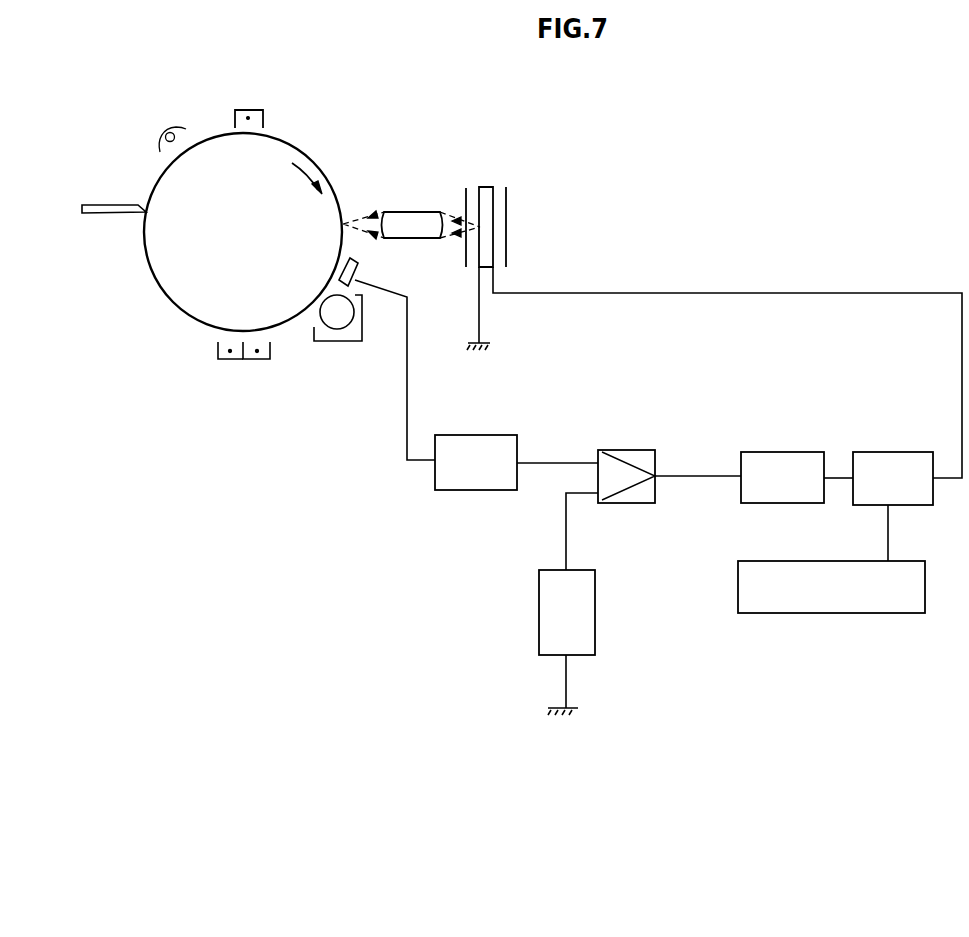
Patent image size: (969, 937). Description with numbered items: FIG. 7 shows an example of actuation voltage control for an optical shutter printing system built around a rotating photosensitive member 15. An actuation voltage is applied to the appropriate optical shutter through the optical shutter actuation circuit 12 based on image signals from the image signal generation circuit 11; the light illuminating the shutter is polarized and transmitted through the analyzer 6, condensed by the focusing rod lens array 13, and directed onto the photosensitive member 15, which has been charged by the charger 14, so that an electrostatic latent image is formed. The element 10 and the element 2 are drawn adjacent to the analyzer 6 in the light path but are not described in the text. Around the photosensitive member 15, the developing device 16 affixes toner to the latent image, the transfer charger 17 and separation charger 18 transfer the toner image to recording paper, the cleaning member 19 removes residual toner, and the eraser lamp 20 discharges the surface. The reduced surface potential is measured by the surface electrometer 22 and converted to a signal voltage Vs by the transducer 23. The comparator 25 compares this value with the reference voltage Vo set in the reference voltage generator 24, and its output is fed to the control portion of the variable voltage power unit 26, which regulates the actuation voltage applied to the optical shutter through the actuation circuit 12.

The light source 2 is at (507, 204).
The analyzer 6 is at (466, 188).
The photosensor 10 is at (494, 188).
The image signal generation circuit 11 is at (796, 615).
The optical shutter actuation circuit 12 is at (884, 467).
The focusing rod lens array 13 is at (408, 212).
The charger 14 is at (263, 112).
The photosensitive member 15 is at (325, 172).
The developing device 16 is at (340, 329).
The transfer charger 17 is at (255, 360).
The separation charger 18 is at (219, 358).
The cleaning member 19 is at (112, 205).
The eraser lamp 20 is at (160, 131).
The surface electrometer 22 is at (360, 273).
The transducer 23 is at (457, 480).
The reference voltage generator 24 is at (550, 627).
The comparator 25 is at (642, 455).
The variable voltage power unit 26 is at (787, 467).